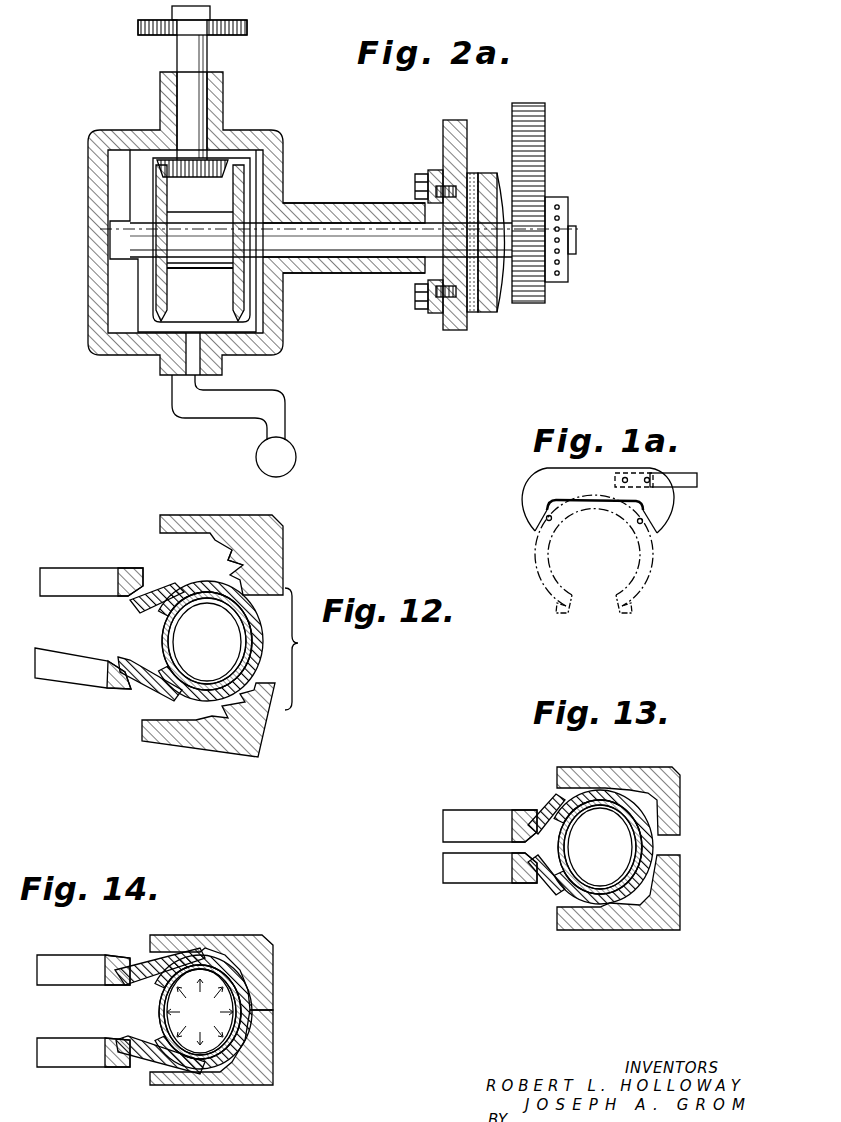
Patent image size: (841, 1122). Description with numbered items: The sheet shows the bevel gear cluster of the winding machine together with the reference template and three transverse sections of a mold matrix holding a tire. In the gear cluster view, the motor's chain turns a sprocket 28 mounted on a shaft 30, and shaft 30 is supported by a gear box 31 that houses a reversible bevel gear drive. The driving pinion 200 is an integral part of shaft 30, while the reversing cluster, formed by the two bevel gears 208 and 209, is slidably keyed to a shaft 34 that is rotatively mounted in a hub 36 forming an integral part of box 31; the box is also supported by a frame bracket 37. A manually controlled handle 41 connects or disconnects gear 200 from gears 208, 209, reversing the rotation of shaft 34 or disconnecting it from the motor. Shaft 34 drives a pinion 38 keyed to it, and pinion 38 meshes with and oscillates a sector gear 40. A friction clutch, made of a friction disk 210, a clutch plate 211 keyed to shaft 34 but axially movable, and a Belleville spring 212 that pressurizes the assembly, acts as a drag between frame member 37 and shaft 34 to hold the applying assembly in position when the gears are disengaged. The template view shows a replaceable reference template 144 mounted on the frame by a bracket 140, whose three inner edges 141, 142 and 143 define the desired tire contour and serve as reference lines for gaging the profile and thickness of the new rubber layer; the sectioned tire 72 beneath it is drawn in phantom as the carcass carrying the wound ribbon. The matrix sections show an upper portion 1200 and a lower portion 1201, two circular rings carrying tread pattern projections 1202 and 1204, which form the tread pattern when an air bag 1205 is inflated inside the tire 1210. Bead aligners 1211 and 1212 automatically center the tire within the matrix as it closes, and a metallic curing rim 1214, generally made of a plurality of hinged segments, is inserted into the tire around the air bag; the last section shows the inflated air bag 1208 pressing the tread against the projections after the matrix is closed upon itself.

In FIG. 2a, the sprocket 28 is at (248, 29).
In FIG. 2a, the shaft 30 is at (186, 53).
In FIG. 2a, the gear box 31 is at (92, 170).
In FIG. 2a, the driving pinion 200 is at (188, 178).
In FIG. 2a, the shaft 34 is at (338, 222).
In FIG. 2a, the hub 36 is at (346, 273).
In FIG. 2a, the bevel gear 209 is at (168, 273).
In FIG. 2a, the bevel gear 208 is at (234, 297).
In FIG. 2a, the manually controlled handle 41 is at (294, 456).
In FIG. 2a, the sector gear 40 is at (540, 122).
In FIG. 2a, the clutch plate 211 is at (487, 173).
In FIG. 2a, the friction disk 210 is at (474, 313).
In FIG. 2a, the Belleville spring 212 is at (503, 306).
In FIG. 2a, the frame bracket 37 is at (452, 331).
In FIG. 2a, the pinion 38 is at (534, 303).
In FIG. 1a, the reference template 144 is at (530, 478).
In FIG. 1a, the inner edge 142 is at (588, 497).
In FIG. 1a, the inner edge 141 is at (546, 518).
In FIG. 1a, the inner edge 143 is at (643, 521).
In FIG. 1a, the bracket 140 is at (697, 481).
In FIG. 1a, the ring 72 is at (655, 565).
In FIG. 12, the upper portion of the matrix 1200 is at (212, 518).
In FIG. 13, the upper portion of the matrix 1200 is at (636, 771).
In FIG. 14, the upper portion of the matrix 1200 is at (230, 936).
In FIG. 12, the lower portion of the matrix 1201 is at (184, 746).
In FIG. 13, the lower portion of the matrix 1201 is at (590, 926).
In FIG. 14, the lower portion of the matrix 1201 is at (160, 1084).
In FIG. 12, the tread pattern projections 1202 is at (250, 576).
In FIG. 12, the bead aligner 1211 is at (80, 560).
In FIG. 13, the bead aligner 1211 is at (486, 818).
In FIG. 14, the bead aligner 1211 is at (82, 945).
In FIG. 12, the bead aligner 1212 is at (48, 674).
In FIG. 13, the bead aligner 1212 is at (466, 876).
In FIG. 14, the bead aligner 1212 is at (56, 1060).
In FIG. 12, the tire 1210 is at (166, 585).
In FIG. 13, the tire 1210 is at (548, 800).
In FIG. 12, the tread pattern projections 1204 is at (236, 708).
In FIG. 12, the metallic curing rim 1214 is at (162, 633).
In FIG. 14, the metallic curing rim 1214 is at (160, 1011).
In FIG. 12, the air bag 1205 is at (182, 658).
In FIG. 13, the air bag 1205 is at (584, 868).
In FIG. 14, the air bag 1208 is at (200, 1011).